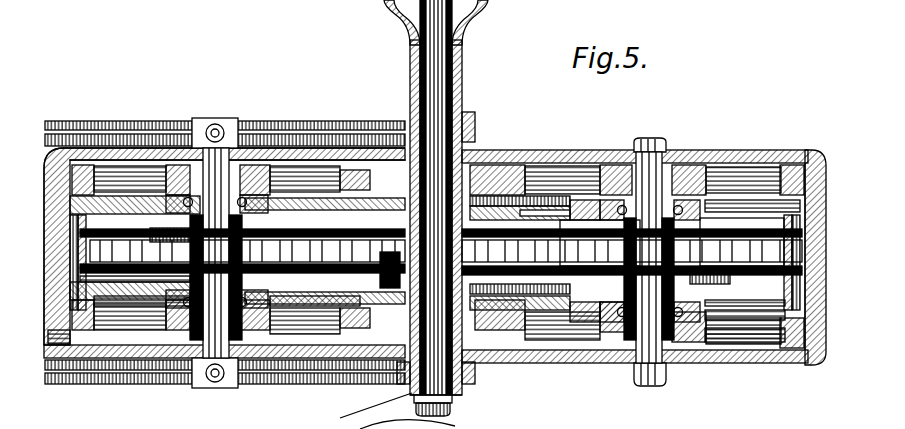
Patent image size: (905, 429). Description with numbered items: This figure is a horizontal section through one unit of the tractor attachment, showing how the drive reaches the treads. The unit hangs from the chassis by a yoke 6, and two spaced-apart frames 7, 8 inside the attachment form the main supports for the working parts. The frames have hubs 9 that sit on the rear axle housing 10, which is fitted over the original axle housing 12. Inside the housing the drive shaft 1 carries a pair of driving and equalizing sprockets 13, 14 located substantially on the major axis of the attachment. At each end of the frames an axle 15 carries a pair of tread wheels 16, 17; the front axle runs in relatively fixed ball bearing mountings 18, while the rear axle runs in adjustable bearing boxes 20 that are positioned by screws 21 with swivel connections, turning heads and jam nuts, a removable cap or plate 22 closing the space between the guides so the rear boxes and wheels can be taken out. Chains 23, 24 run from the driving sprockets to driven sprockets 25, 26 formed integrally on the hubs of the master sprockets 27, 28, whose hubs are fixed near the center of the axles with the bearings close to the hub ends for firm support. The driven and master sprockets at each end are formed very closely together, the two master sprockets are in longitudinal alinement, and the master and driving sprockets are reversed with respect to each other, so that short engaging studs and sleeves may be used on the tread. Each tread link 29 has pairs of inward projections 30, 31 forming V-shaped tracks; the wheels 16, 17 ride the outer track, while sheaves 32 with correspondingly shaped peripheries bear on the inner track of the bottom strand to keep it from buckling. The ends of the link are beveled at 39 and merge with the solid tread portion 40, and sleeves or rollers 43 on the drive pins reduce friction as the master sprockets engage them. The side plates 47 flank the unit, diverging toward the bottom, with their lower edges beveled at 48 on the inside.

The drive shaft 1 is at (455, 98).
The yoke 6 is at (320, 148).
The frame 7 is at (752, 294).
The frame 8 is at (276, 312).
The hub 9 is at (405, 112).
The rear axle housing 10 is at (476, 118).
The original axle housing 12 is at (465, 28).
The driving and equalizing sprocket 13 is at (396, 248).
The driving and equalizing sprocket 14 is at (392, 275).
The axle 15 is at (205, 120).
The tread wheel 16 is at (128, 168).
The tread wheel 17 is at (750, 180).
The ball bearing mounting 18 is at (180, 206).
The bearing box 20 is at (700, 172).
The screw 21 is at (566, 210).
The cap or plate 22 is at (718, 205).
The chain 23 is at (272, 204).
The chain 24 is at (572, 262).
The driven sprocket 25 is at (156, 236).
The driven sprocket 26 is at (712, 284).
The master sprocket 27 is at (128, 258).
The master sprocket 28 is at (724, 262).
The link 29 is at (108, 300).
The inward projection (track) 30 is at (74, 184).
The inward projection (track) 31 is at (800, 330).
The sheave 32 is at (318, 312).
The beveled surface 39 is at (70, 150).
The tread portion 40 is at (442, 411).
The sleeve or roller 43 is at (84, 246).
The side plate 47 is at (540, 195).
The beveled edge 48 is at (112, 134).